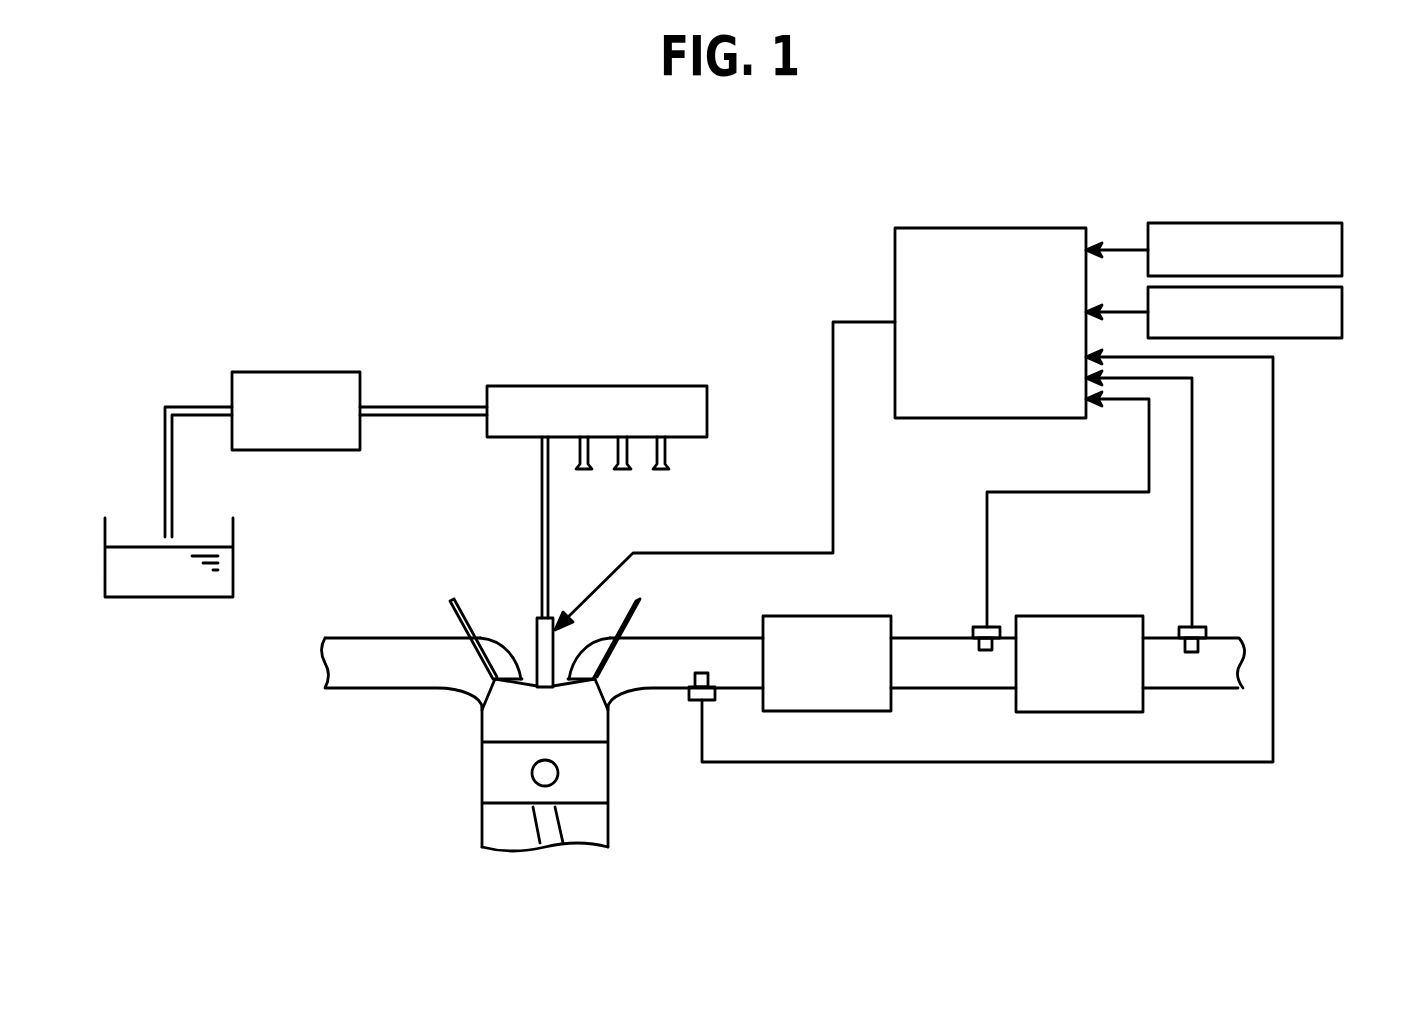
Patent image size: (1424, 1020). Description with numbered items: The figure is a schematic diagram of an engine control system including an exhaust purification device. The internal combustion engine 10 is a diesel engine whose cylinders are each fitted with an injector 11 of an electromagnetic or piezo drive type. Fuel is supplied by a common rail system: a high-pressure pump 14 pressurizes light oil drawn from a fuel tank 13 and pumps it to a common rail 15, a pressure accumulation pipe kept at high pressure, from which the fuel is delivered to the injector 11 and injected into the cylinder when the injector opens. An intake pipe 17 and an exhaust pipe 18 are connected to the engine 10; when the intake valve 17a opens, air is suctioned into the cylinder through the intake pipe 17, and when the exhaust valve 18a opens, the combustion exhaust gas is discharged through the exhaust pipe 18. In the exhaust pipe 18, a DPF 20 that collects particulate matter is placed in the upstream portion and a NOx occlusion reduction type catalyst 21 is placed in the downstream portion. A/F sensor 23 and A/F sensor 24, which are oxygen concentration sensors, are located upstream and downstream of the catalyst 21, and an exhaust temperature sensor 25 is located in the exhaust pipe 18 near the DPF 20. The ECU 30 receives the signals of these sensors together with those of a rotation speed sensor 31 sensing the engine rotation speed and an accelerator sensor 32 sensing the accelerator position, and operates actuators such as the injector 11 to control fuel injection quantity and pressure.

The internal combustion engine 10 is at (475, 784).
The injector 11 is at (529, 618).
The fuel tank 13 is at (122, 597).
The high-pressure pump 14 is at (330, 372).
The common rail 15 is at (672, 386).
The intake pipe 17 is at (359, 688).
The intake valve 17a is at (450, 603).
The exhaust pipe 18 is at (653, 689).
The exhaust valve 18a is at (639, 604).
The DPF 20 is at (798, 616).
The catalyst 21 is at (1105, 616).
The A/F sensor 23 is at (986, 623).
The A/F sensor 24 is at (1197, 624).
The exhaust temperature sensor 25 is at (705, 702).
The ECU 30 is at (1043, 228).
The rotation speed sensor 31 is at (1343, 250).
The accelerator sensor 32 is at (1343, 312).